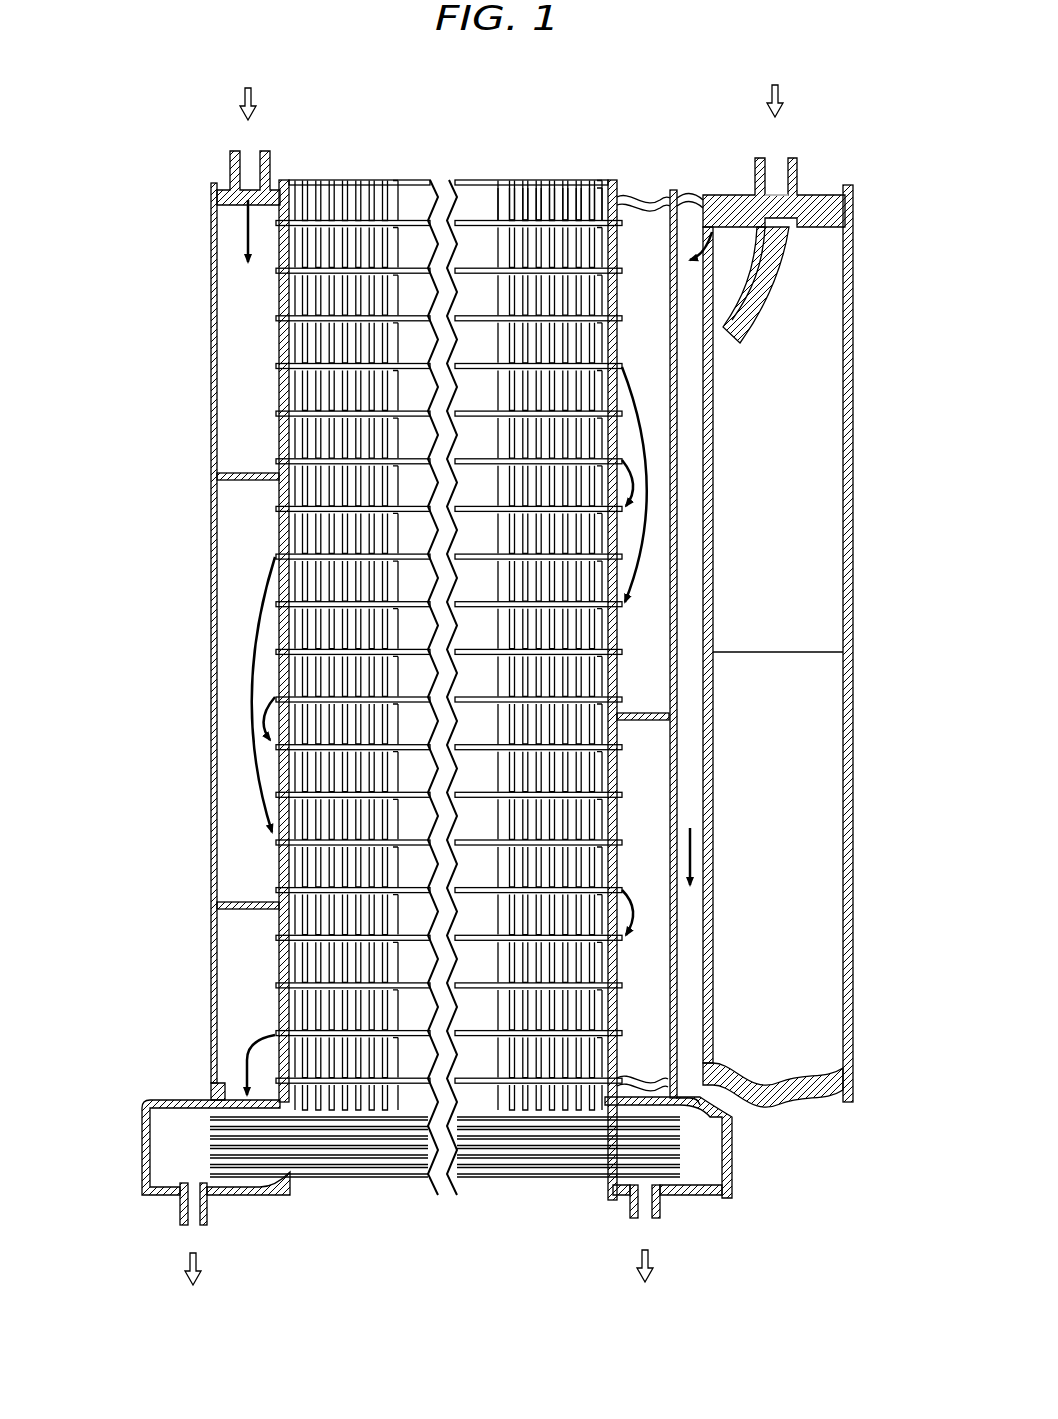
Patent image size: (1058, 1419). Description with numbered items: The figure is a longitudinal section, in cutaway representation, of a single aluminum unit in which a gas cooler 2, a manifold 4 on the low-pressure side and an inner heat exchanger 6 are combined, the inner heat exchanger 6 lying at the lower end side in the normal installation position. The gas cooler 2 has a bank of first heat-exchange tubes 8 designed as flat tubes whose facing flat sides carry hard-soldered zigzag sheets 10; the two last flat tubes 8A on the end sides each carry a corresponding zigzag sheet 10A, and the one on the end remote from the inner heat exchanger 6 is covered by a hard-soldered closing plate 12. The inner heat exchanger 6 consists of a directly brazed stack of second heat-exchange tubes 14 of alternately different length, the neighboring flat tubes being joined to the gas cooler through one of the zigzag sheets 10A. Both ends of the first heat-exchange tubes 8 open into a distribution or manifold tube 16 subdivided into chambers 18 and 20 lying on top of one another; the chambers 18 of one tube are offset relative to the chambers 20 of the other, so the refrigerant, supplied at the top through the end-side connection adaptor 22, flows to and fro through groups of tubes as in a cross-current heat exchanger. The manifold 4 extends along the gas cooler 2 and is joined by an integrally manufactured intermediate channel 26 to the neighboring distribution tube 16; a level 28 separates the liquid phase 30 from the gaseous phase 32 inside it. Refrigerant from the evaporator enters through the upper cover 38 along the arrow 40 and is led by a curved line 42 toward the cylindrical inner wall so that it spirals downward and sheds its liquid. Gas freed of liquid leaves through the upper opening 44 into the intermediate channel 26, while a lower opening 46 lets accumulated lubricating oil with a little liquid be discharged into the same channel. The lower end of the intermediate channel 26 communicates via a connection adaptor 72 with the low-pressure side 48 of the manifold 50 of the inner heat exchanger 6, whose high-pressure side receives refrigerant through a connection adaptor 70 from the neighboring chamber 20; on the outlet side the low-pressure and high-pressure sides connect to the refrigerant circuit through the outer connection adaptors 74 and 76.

The gas cooler 2 is at (402, 160).
The manifold on the low-pressure side 4 is at (880, 546).
The inner heat exchanger 6 is at (472, 1196).
The first heat-exchange tubes 8 is at (335, 985).
The last flat tubes on the end sides 8A is at (312, 214).
The zigzag sheets 10 is at (524, 240).
The zigzag sheet 10A is at (375, 1095).
The closing plate 12 is at (588, 185).
The second heat-exchange tubes 14 is at (320, 1150).
The distribution or manifold tube 16 is at (218, 606).
The chambers 18 is at (658, 292).
The chambers 20 is at (258, 359).
The end-side connection adaptor 22 is at (230, 190).
The intermediate channel 26 is at (705, 488).
The level 28 is at (842, 652).
The liquid phase 30 is at (765, 819).
The gaseous phase 32 is at (765, 564).
The upper cover 38 is at (808, 205).
The arrow 40 is at (783, 100).
The curved line 42 is at (748, 304).
The upper opening 44 is at (702, 222).
The lower opening 46 is at (812, 1093).
The low-pressure side 48 is at (190, 1152).
The manifold 50 is at (116, 1152).
The connection adaptor 70 is at (216, 1086).
The connection adaptor 72 is at (705, 1103).
The outer connection adaptor 74 is at (185, 1218).
The outer connection adaptor 76 is at (635, 1210).